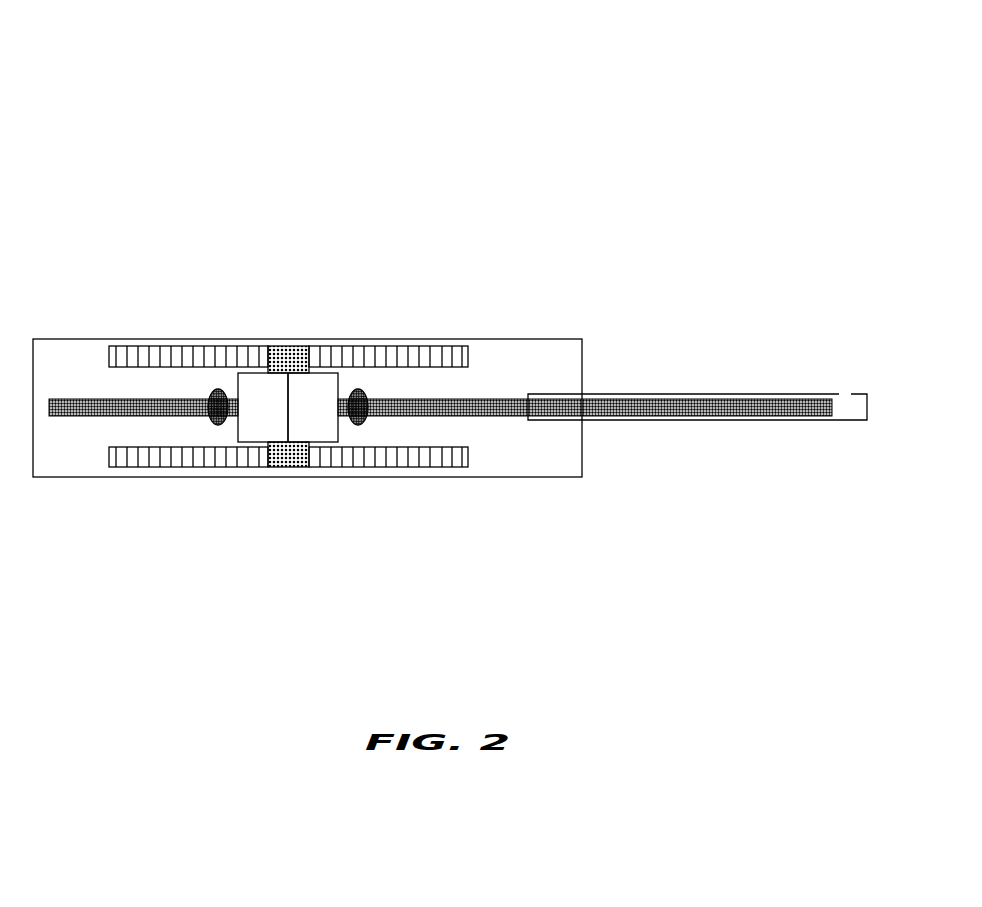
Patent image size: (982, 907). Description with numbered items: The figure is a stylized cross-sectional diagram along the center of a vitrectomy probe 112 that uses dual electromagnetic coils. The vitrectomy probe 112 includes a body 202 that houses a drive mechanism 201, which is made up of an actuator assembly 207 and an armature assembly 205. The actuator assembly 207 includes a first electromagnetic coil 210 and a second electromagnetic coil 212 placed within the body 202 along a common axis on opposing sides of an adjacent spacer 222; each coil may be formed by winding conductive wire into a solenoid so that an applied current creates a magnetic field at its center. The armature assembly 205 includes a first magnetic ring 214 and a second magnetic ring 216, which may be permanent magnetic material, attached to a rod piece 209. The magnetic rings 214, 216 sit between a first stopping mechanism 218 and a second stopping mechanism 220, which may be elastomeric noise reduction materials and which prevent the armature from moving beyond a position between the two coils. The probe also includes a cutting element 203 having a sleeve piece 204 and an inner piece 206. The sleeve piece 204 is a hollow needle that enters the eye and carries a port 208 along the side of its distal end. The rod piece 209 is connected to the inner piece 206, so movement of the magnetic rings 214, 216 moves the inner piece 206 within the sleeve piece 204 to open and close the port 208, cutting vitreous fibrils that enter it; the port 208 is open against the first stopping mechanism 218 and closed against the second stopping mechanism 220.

The vitrectomy probe 112 is at (186, 106).
The drive mechanism 201 is at (240, 306).
The body 202 is at (72, 338).
The cutting element 203 is at (789, 373).
The sleeve piece 204 is at (648, 393).
The armature assembly 205 is at (206, 381).
The inner piece 206 is at (726, 400).
The actuator assembly 207 is at (270, 508).
The port 208 is at (848, 393).
The rod piece 209 is at (493, 406).
The first electromagnetic coil 210 is at (194, 338).
The second electromagnetic coil 212 is at (384, 338).
The first magnetic ring 214 is at (280, 403).
The second magnetic ring 216 is at (330, 433).
The first stopping mechanism 218 is at (210, 421).
The second stopping mechanism 220 is at (362, 396).
The spacer 222 is at (286, 338).